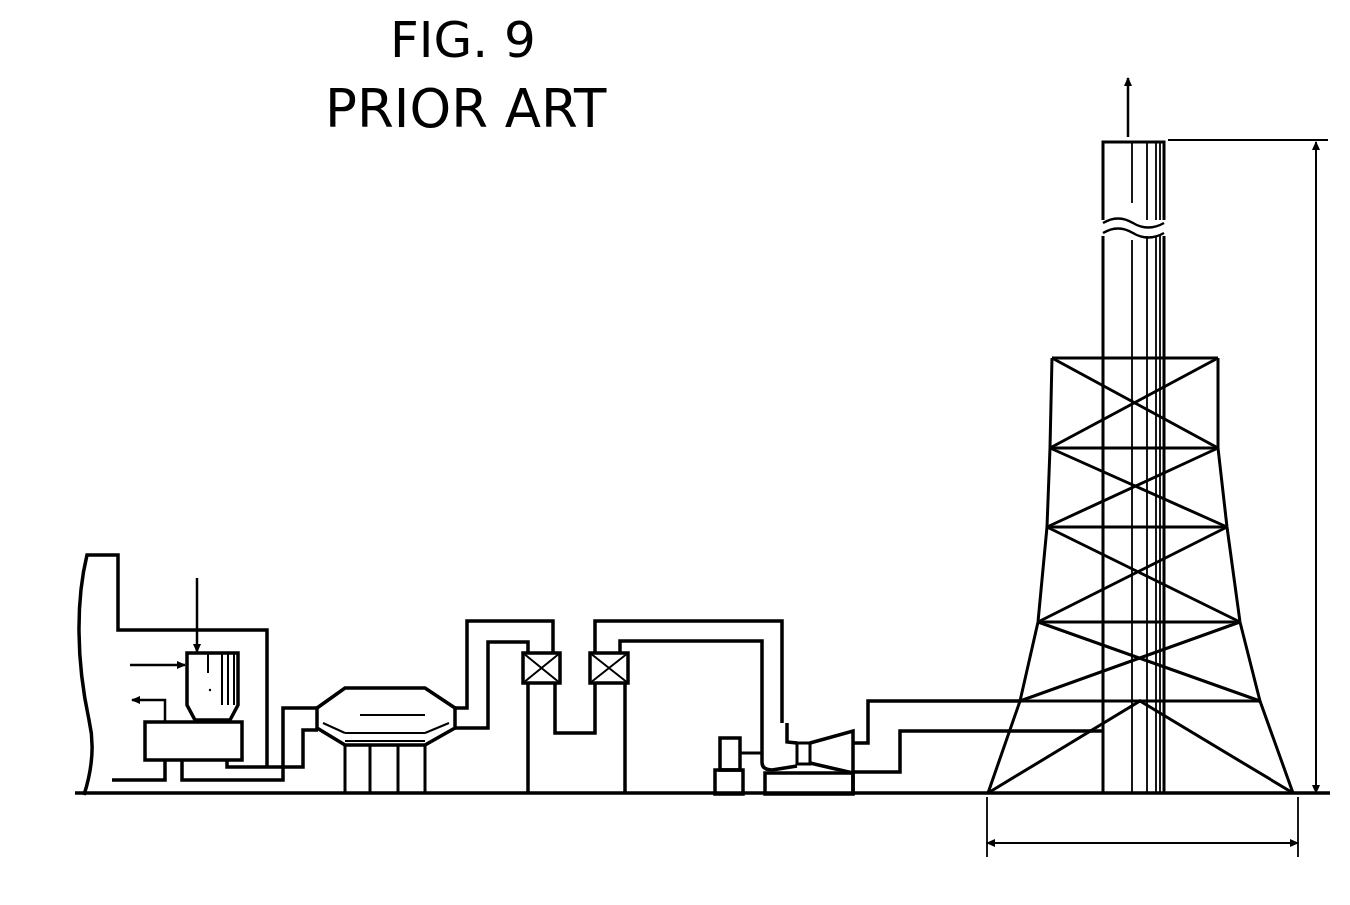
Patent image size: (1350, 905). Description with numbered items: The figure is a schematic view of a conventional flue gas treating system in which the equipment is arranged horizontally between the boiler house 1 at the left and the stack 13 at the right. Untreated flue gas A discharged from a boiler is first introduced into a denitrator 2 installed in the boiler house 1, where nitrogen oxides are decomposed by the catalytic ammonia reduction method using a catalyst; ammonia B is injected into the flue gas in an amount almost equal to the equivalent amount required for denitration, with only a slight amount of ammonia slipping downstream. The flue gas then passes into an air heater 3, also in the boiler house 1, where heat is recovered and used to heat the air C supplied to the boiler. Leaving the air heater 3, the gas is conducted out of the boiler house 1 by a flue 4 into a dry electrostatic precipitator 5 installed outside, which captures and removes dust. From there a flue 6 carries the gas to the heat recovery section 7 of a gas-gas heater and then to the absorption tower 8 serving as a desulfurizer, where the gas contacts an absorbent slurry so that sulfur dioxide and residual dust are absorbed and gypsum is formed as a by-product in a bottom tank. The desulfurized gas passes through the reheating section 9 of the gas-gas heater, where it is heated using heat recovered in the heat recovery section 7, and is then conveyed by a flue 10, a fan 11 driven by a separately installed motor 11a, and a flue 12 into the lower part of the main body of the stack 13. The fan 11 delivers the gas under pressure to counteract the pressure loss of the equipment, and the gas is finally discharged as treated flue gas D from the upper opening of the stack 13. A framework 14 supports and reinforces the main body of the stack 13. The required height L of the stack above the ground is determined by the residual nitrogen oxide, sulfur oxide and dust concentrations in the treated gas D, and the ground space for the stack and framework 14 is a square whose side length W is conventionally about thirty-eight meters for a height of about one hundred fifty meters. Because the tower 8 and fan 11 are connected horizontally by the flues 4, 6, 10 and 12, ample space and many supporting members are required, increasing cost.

The boiler house 1 is at (232, 630).
The denitrator 2 is at (238, 665).
The air heater 3 is at (182, 764).
The flue 4 is at (281, 782).
The dry electrostatic precipitator 5 is at (380, 688).
The flue 6 is at (463, 628).
The heat recovery section 7 is at (560, 652).
The absorption tower 8 is at (527, 765).
The reheating section 9 is at (628, 668).
The flue 10 is at (718, 620).
The fan 11 is at (833, 732).
The motor 11a is at (718, 752).
The flue 12 is at (935, 701).
The stack 13 is at (1101, 268).
The framework 14 is at (1050, 402).
The untreated flue gas A is at (138, 665).
The ammonia B is at (196, 592).
The air C is at (128, 782).
The treated flue gas D is at (1104, 100).
The height of the main body of stack L is at (1254, 466).
The length of sides of ground space W is at (1142, 827).